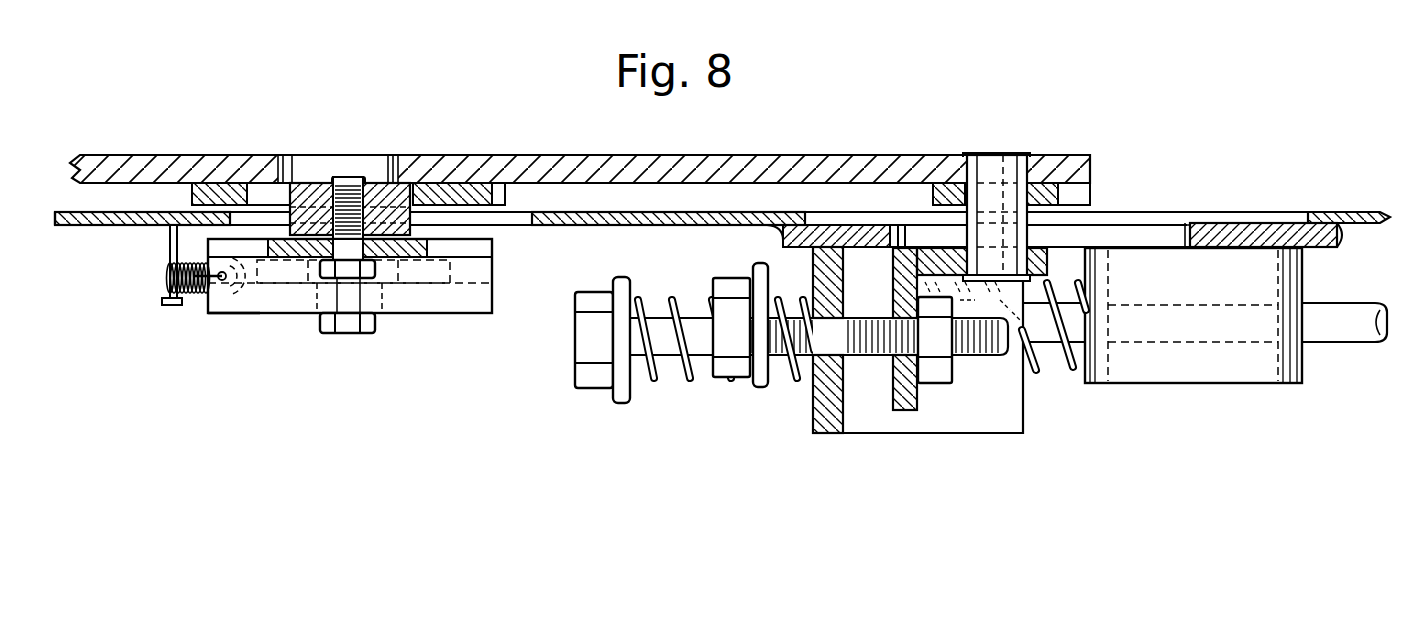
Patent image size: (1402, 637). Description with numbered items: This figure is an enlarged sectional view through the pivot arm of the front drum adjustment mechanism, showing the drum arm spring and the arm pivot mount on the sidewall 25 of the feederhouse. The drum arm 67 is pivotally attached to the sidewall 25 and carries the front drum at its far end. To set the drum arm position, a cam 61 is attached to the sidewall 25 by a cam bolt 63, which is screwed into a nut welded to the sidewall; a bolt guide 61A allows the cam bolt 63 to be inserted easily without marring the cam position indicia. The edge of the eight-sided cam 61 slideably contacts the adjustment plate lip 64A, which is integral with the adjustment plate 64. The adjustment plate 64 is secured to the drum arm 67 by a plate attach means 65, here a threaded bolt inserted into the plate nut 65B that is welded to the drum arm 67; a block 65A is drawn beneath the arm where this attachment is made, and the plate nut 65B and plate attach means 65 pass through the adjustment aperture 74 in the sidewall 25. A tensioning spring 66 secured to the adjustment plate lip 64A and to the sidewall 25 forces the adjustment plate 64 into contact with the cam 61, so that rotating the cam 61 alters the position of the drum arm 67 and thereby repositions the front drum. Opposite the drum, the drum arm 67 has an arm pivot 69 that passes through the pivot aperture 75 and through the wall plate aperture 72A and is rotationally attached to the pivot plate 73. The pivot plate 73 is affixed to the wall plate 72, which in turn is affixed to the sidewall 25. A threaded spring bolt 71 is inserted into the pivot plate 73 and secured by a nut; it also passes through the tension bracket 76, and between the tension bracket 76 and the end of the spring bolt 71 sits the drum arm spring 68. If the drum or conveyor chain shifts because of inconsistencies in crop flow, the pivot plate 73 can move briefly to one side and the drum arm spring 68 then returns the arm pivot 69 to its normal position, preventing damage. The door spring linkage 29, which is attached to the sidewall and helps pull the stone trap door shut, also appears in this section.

The sidewall 25 is at (137, 226).
The door spring linkage 29 is at (1047, 350).
The cam 61 is at (447, 284).
The bolt guide 61A is at (398, 301).
The cam bolt 63 is at (350, 334).
The adjustment plate 64 is at (244, 252).
The adjustment plate lip 64A is at (223, 314).
The plate attach means 65 is at (453, 186).
The mounting block 65A is at (352, 178).
The plate nut 65B is at (315, 178).
The tensioning spring 66 is at (190, 300).
The drum arm 67 is at (215, 156).
The drum arm spring 68 is at (653, 381).
The arm pivot 69 is at (990, 167).
The spring bolt 71 is at (582, 389).
The wall plate 72 is at (1325, 242).
The wall plate aperture 72A is at (1140, 233).
The pivot plate 73 is at (922, 399).
The adjustment aperture 74 is at (512, 227).
The pivot aperture 75 is at (1190, 213).
The tension bracket 76 is at (825, 431).